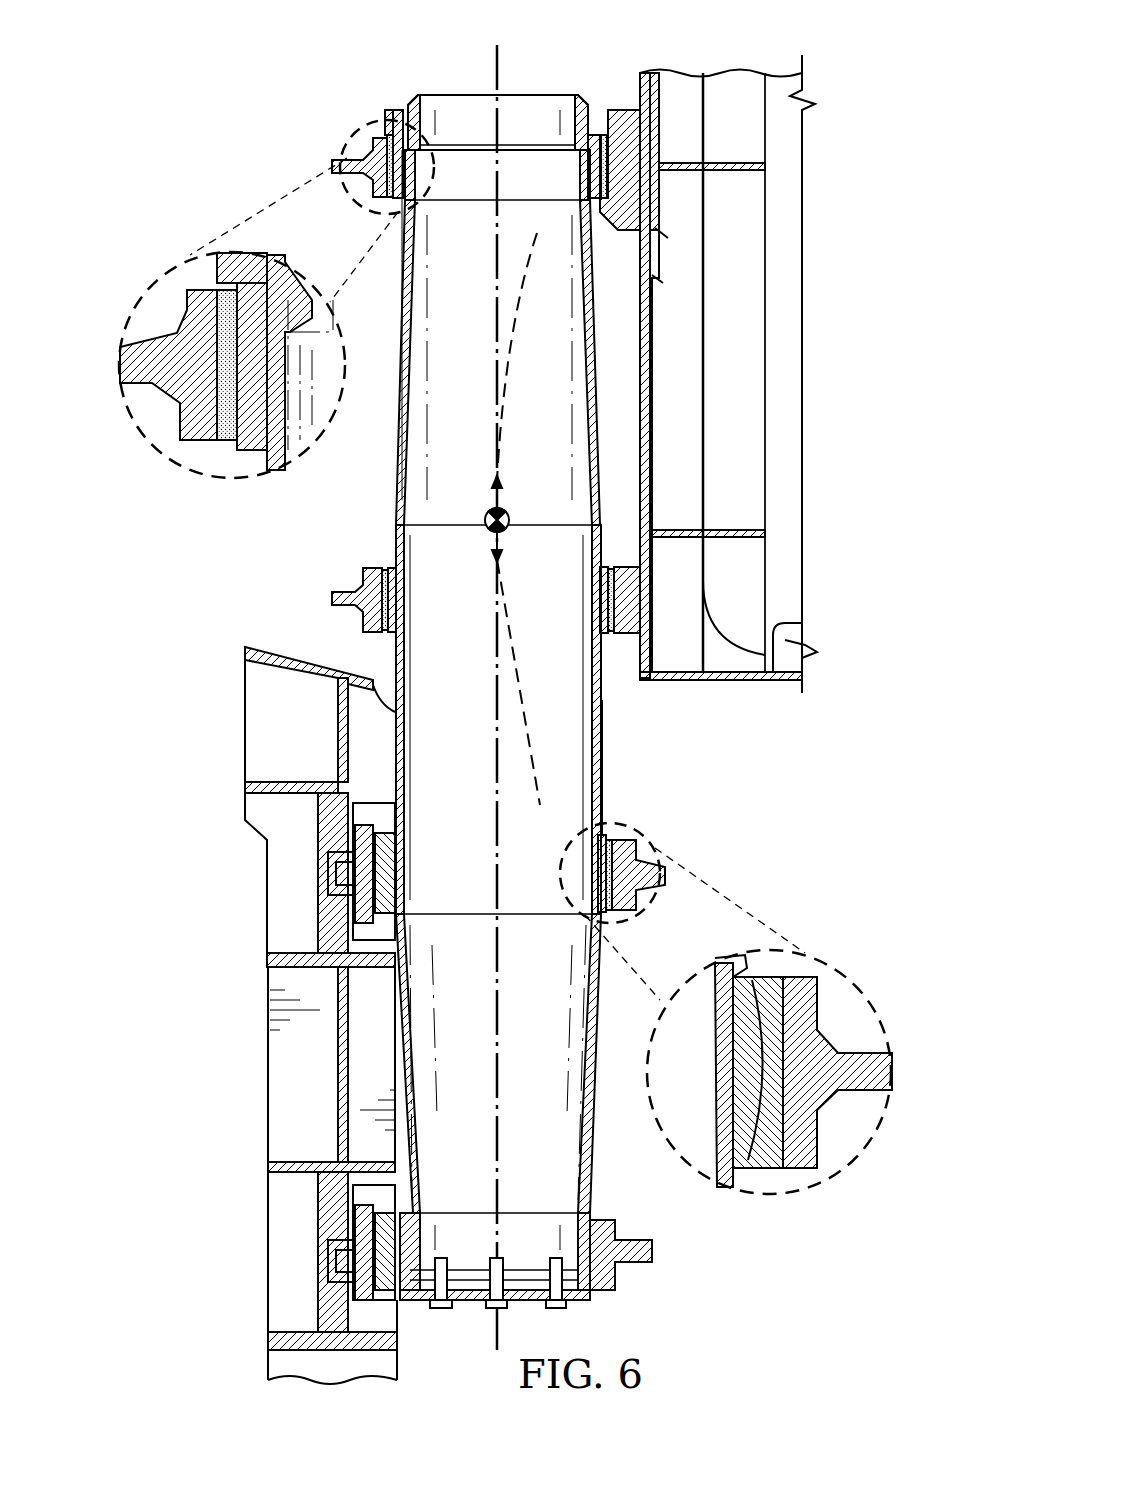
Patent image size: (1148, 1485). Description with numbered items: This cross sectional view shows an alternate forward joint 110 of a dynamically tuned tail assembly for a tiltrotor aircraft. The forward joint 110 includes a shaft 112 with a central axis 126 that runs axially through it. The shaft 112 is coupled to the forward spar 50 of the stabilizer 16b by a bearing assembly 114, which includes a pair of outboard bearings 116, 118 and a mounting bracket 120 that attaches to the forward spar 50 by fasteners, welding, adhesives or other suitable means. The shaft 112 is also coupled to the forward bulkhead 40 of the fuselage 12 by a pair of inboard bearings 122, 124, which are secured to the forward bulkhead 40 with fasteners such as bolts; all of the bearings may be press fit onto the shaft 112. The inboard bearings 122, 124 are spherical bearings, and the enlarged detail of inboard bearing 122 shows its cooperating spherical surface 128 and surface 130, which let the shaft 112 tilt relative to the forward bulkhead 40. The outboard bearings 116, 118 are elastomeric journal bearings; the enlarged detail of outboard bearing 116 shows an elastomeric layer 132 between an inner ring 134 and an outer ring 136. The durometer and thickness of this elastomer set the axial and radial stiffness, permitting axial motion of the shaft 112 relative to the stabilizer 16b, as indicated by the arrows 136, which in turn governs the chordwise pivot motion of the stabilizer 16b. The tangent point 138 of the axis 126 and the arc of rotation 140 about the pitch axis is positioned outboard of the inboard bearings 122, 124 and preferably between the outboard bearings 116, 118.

The fuselage 12 is at (285, 1345).
The stabilizer 16b is at (806, 170).
The forward bulkhead 40 is at (278, 1303).
The forward spar 50 is at (802, 300).
The forward joint 110 is at (604, 728).
The shaft 112 is at (602, 778).
The bearing assembly 114 is at (628, 130).
The outboard bearing 116 is at (350, 158).
The outboard bearing 118 is at (342, 590).
The mounting bracket 120 is at (668, 170).
The inboard bearing 122 is at (640, 845).
The inboard bearing 124 is at (625, 1270).
The central axis 126 is at (490, 62).
The surface 128 is at (775, 1160).
The surface 130 is at (760, 1145).
The elastomeric layer 132 is at (225, 445).
The inner ring 134 is at (250, 455).
The outer ring 136 is at (492, 545).
The tangent point 138 is at (483, 515).
The arc of rotation 140 is at (527, 278).